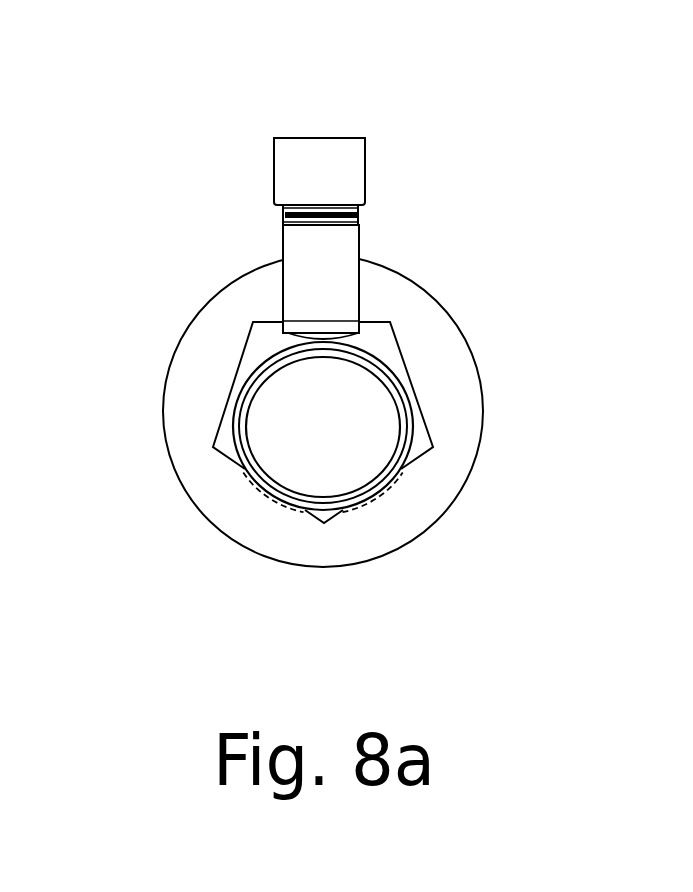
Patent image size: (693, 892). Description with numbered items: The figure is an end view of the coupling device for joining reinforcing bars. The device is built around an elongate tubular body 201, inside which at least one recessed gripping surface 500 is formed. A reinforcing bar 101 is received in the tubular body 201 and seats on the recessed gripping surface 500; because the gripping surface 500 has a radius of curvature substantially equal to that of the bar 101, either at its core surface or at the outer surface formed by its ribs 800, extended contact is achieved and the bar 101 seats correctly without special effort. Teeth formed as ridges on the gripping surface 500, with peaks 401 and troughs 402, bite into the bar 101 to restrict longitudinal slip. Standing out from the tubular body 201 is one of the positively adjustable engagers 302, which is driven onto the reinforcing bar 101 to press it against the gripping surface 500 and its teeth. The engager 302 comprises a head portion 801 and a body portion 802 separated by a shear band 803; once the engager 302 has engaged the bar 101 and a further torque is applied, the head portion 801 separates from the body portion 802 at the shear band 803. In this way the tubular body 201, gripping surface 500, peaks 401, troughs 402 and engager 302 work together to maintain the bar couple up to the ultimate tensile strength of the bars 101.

The reinforcing bar 101 is at (350, 370).
The tubular body 201 is at (197, 350).
The engager 302 is at (263, 128).
The peaks 401 is at (247, 475).
The troughs 402 is at (282, 507).
The recessed gripping surface 500 is at (252, 505).
The ribs 800 is at (386, 347).
The head portion 801 is at (352, 183).
The body portion 802 is at (295, 240).
The shear band 803 is at (360, 210).